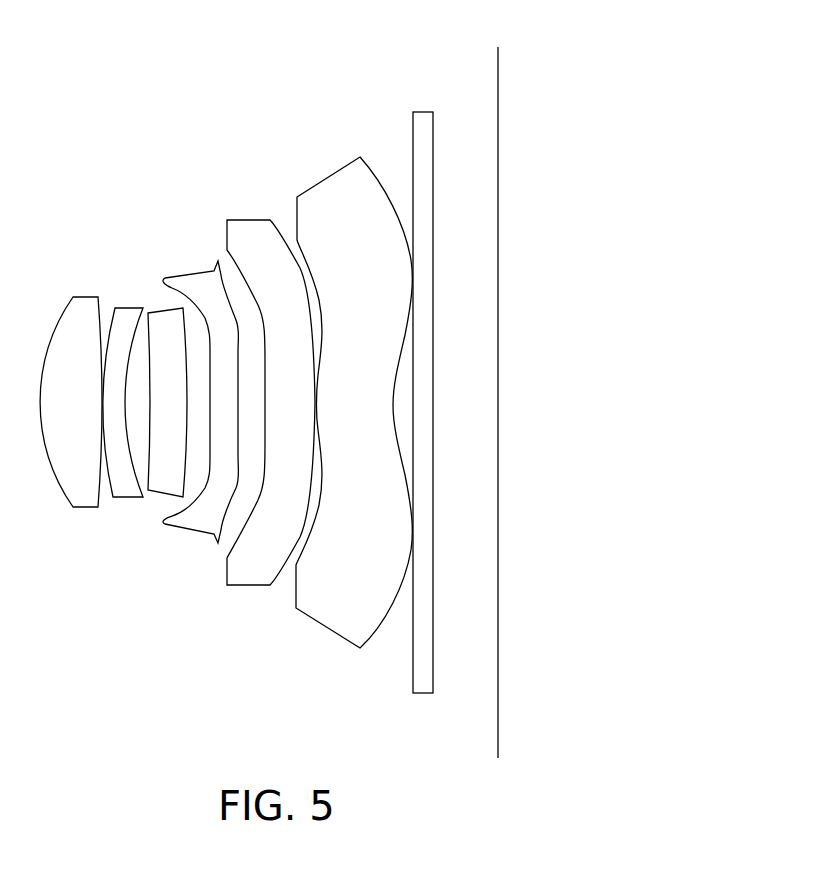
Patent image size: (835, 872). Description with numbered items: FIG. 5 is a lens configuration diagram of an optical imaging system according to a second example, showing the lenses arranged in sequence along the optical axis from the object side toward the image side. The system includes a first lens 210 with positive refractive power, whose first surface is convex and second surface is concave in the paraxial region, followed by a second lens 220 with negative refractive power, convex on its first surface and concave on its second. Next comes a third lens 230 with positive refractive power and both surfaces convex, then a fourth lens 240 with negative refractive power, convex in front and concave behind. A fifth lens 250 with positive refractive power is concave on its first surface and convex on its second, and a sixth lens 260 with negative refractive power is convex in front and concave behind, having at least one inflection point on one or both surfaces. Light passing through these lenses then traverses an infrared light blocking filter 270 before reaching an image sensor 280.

The first lens 210 is at (82, 297).
The second lens 220 is at (127, 305).
The third lens 230 is at (155, 308).
The fourth lens 240 is at (195, 272).
The fifth lens 250 is at (251, 220).
The sixth lens 260 is at (323, 177).
The infrared light blocking filter 270 is at (424, 112).
The image sensor 280 is at (498, 85).